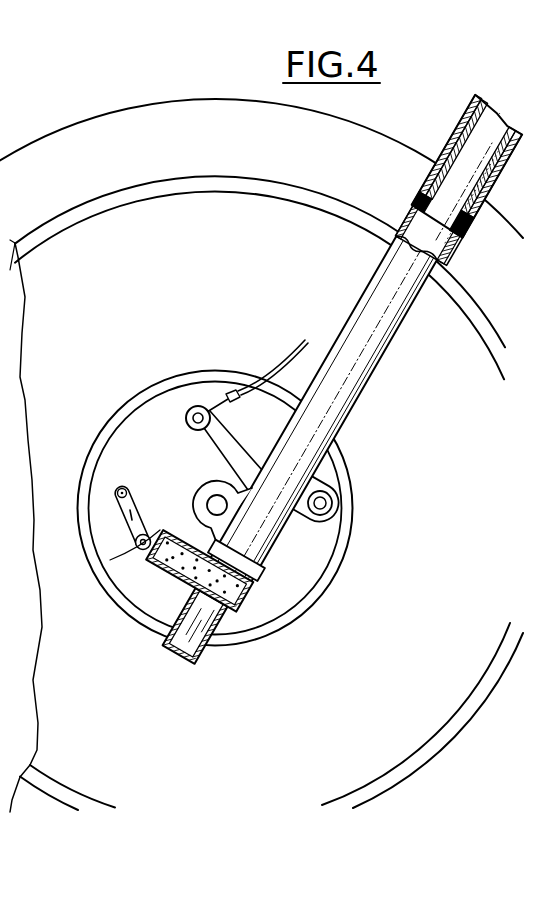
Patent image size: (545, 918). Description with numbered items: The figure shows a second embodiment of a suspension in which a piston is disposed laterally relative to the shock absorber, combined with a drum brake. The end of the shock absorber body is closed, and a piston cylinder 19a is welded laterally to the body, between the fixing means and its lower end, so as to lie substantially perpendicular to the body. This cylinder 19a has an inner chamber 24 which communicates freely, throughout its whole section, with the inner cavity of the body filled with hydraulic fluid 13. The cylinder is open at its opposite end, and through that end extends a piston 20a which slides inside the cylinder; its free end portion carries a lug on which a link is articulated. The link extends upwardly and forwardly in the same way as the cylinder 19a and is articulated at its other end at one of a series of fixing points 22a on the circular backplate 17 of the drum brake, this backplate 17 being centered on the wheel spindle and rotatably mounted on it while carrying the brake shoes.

The hydraulic fluid 13 is at (213, 603).
The circular backplate 17 is at (187, 420).
The piston cylinder 19a is at (167, 570).
The piston 20a is at (135, 548).
The fixing points 22a is at (125, 487).
The inner chamber 24 is at (190, 540).